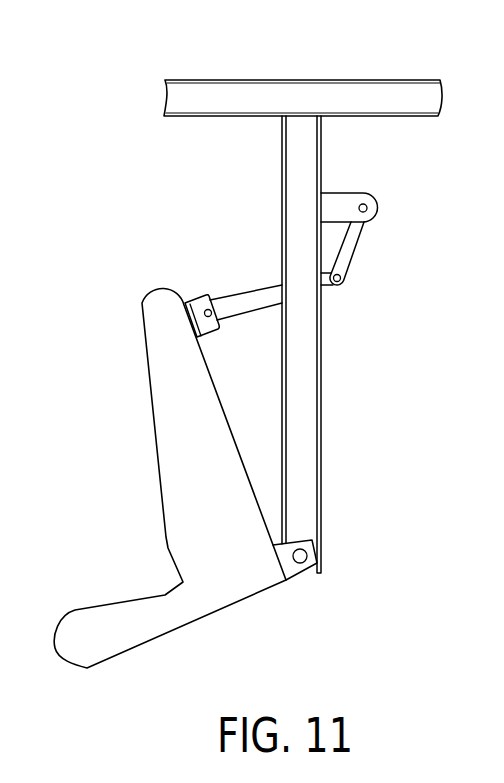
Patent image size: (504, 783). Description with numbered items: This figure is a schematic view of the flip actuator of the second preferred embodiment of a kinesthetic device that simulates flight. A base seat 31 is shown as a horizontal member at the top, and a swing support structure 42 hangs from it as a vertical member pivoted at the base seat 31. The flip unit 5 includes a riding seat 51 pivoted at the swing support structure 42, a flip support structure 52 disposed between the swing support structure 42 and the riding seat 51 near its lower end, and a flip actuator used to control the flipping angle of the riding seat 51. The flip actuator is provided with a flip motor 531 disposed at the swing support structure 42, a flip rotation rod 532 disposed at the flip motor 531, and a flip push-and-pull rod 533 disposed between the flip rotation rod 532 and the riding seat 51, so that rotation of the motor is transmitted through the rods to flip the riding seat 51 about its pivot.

The flip unit 5 is at (62, 331).
The base seat 31 is at (336, 93).
The swing support structure 42 is at (305, 338).
The riding seat 51 is at (172, 415).
The flip support structure 52 is at (285, 563).
The flip motor 531 is at (376, 208).
The flip rotation rod 532 is at (348, 250).
The flip push-and-pull rod 533 is at (245, 301).